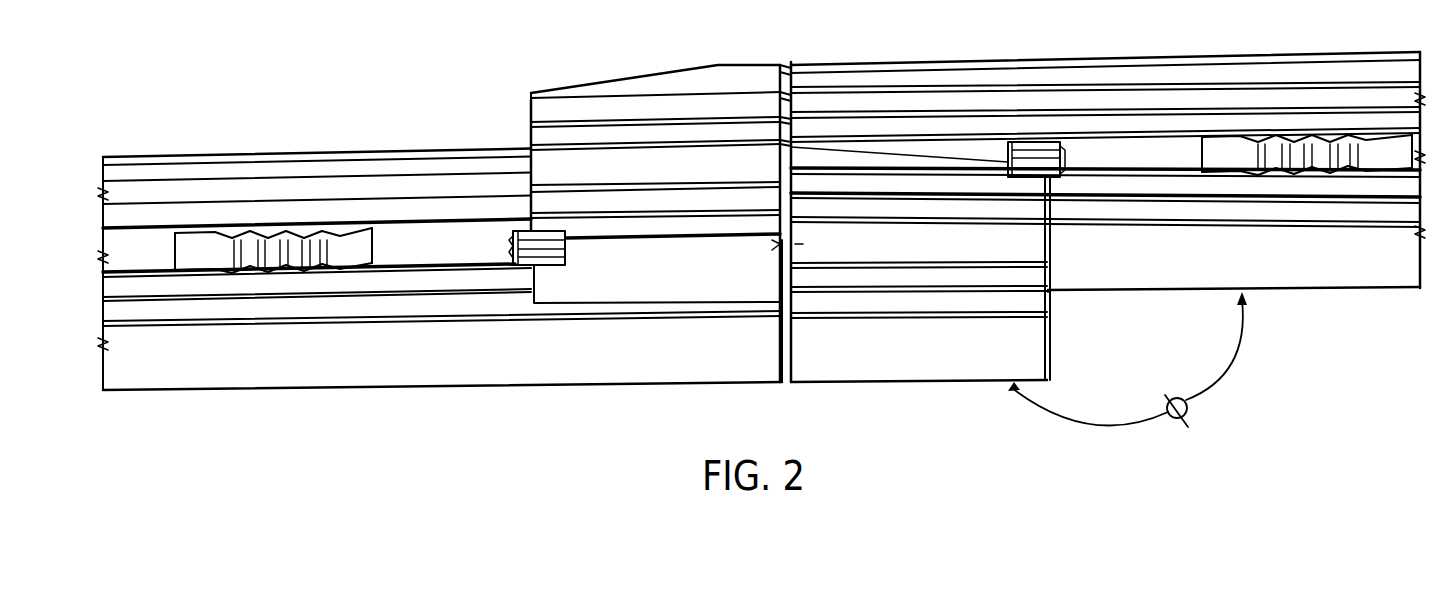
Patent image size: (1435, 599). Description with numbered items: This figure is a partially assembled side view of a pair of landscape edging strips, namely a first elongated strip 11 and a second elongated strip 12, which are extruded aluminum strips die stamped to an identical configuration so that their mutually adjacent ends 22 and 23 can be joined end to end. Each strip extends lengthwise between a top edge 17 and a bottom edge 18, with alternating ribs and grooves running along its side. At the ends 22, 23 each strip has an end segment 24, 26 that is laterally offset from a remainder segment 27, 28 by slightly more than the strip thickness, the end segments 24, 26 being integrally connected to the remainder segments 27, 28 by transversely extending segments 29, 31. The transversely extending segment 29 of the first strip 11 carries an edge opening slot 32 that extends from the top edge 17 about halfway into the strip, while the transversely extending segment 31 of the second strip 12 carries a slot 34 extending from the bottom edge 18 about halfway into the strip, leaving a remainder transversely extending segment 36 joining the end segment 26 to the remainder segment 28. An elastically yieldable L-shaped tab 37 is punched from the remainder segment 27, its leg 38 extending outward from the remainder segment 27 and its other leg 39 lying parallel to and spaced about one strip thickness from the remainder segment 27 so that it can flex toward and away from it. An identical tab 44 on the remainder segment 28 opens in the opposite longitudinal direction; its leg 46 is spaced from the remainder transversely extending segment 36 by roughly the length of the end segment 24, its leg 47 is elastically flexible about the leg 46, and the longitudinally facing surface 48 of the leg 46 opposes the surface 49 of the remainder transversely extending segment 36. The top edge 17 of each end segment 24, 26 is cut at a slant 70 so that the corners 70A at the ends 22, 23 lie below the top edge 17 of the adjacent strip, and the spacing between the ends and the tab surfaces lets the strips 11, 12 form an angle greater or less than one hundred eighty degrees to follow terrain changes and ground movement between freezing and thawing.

The first elongated strip 11 is at (372, 146).
The second elongated strip 12 is at (1166, 46).
The top edge 17 is at (272, 152).
The bottom edge 18 is at (278, 391).
The end of first strip 22 is at (1062, 353).
The end of second strip 23 is at (520, 112).
The end segment of first strip 24 is at (964, 385).
The end segment of second strip 26 is at (607, 72).
The remainder segment of first strip 27 is at (441, 384).
The remainder segment of second strip 28 is at (1157, 272).
The transversely extending segment of first strip 29 is at (780, 387).
The transversely extending segment of second strip 31 is at (781, 60).
The edge opening slot 32 is at (795, 245).
The slot 34 is at (779, 245).
The remainder transversely extending segment 36 is at (792, 102).
The tab 37 is at (582, 268).
The leg of tab 38 is at (512, 241).
The leg of tab 39 is at (547, 264).
The tab 44 is at (998, 176).
The leg of tab 46 is at (1066, 157).
The leg of tab 47 is at (1027, 174).
The longitudinally facing surface 48 is at (1050, 140).
The surface of remainder transversely extending segment 49 is at (788, 74).
The slant 70 is at (637, 80).
The corner 70A is at (530, 95).